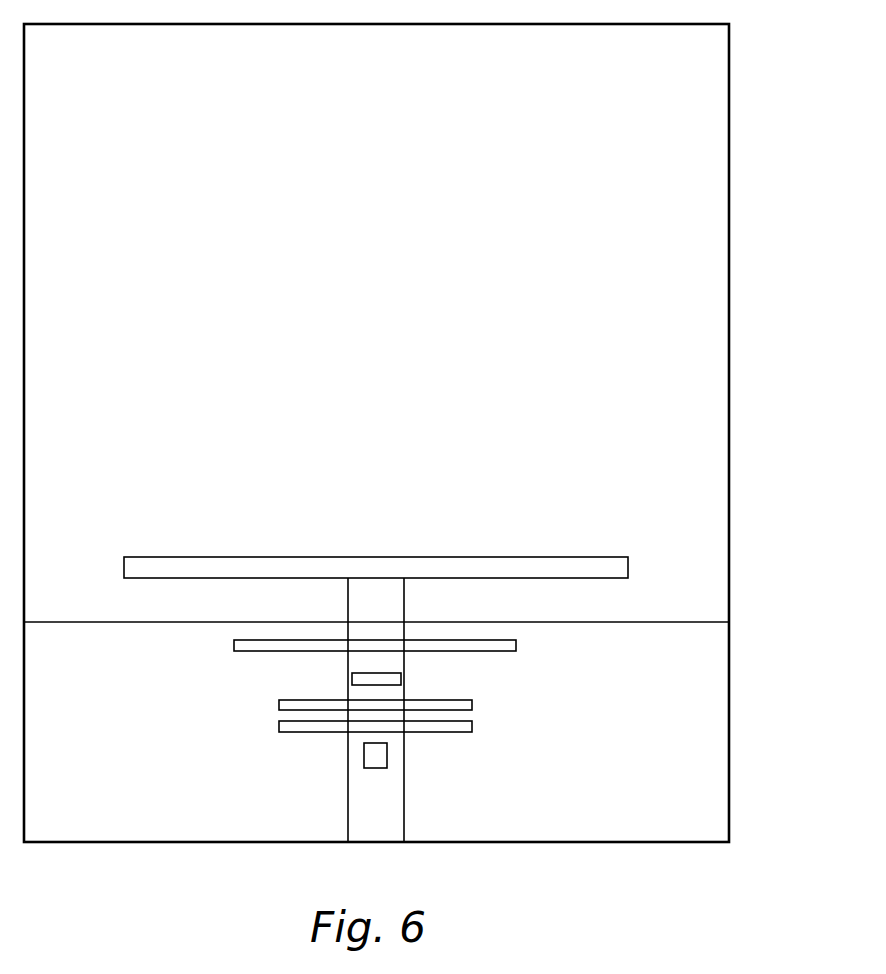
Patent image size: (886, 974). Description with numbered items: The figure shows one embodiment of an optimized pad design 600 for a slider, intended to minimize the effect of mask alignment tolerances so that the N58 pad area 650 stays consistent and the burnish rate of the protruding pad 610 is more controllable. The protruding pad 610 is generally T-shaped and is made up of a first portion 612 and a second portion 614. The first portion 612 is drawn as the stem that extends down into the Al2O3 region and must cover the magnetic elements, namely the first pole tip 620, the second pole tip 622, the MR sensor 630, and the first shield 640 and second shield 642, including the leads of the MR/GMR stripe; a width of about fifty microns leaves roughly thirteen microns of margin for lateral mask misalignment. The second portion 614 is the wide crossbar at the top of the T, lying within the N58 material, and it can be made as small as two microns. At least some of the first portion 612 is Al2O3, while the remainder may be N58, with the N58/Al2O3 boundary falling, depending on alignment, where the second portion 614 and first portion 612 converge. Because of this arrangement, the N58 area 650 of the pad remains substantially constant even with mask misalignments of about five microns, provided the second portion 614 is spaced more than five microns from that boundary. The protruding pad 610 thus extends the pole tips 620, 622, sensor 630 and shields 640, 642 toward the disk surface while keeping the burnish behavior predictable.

The optimized pad design 600 is at (773, 241).
The protruding pad 610 is at (336, 776).
The first portion 612 is at (405, 810).
The second portion 614 is at (180, 556).
The first pole tip 620 is at (472, 726).
The second pole tip 622 is at (387, 758).
The MR sensor 630 is at (401, 679).
The first shield 640 is at (516, 645).
The second shield 642 is at (472, 705).
The N58 pad area 650 is at (652, 553).